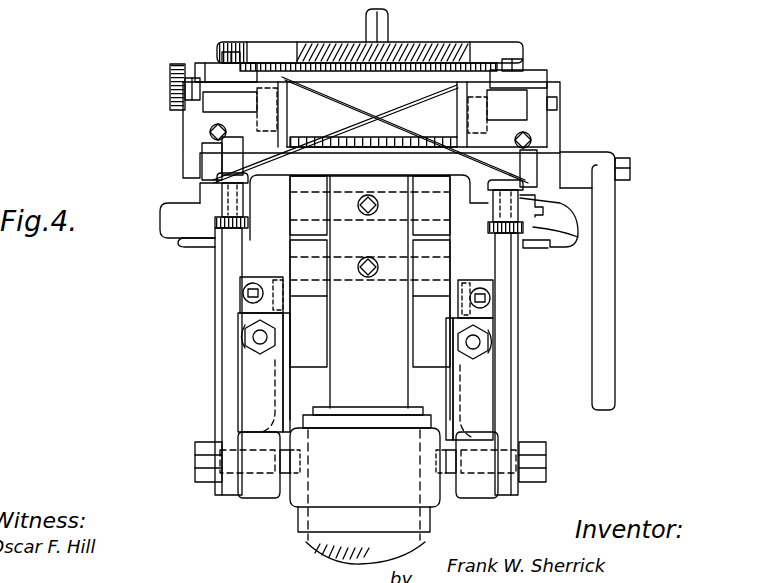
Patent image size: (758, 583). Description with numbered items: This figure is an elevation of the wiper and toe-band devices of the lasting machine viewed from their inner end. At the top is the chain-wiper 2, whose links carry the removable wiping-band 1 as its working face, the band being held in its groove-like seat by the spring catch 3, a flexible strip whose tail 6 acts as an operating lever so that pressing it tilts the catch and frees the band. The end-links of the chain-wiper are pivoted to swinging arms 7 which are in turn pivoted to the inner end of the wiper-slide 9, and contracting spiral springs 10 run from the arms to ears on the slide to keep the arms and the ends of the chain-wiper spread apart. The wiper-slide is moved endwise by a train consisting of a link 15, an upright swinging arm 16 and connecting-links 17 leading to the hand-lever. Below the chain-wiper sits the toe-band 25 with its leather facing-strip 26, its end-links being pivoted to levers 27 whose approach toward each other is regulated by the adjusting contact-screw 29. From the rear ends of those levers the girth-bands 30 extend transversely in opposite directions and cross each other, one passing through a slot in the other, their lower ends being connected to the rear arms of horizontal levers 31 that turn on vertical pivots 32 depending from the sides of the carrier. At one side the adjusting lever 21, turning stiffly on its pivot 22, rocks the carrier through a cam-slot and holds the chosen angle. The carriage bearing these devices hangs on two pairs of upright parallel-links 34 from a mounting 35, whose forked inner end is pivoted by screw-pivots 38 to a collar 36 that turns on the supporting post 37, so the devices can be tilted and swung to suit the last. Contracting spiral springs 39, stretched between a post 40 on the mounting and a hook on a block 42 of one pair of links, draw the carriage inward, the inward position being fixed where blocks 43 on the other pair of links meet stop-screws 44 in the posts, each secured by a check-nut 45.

The wiping-band 1 is at (318, 83).
The chain-wiper 2 is at (336, 41).
The spring catch 3 is at (376, 73).
The tail 6 is at (388, 22).
The swinging arms 7 is at (195, 68).
The wiper-slide 9 is at (478, 43).
The contracting spiral springs 10 is at (222, 52).
The link 15 is at (300, 226).
The upright swinging arm 16 is at (377, 402).
The connecting-links 17 is at (313, 331).
The adjusting lever 21 is at (612, 305).
The pivot 22 is at (630, 168).
The toe-band 25 is at (210, 150).
The facing-strip 26 is at (363, 134).
The levers 27 is at (237, 105).
The adjusting contact-screw 29 is at (170, 78).
The girth-bands 30 is at (313, 137).
The horizontal levers 31 is at (167, 223).
The vertical pivots 32 is at (200, 255).
The upright parallel-links 34 is at (236, 334).
The mounting 35 is at (283, 498).
The collar 36 is at (432, 502).
The supporting post 37 is at (307, 546).
The screw-pivots 38 is at (238, 496).
The contracting spiral springs 39 is at (250, 277).
The post 40 is at (250, 378).
The block 42 is at (243, 283).
The blocks 43 is at (250, 328).
The stop-screws 44 is at (250, 345).
The check-nut 45 is at (238, 338).